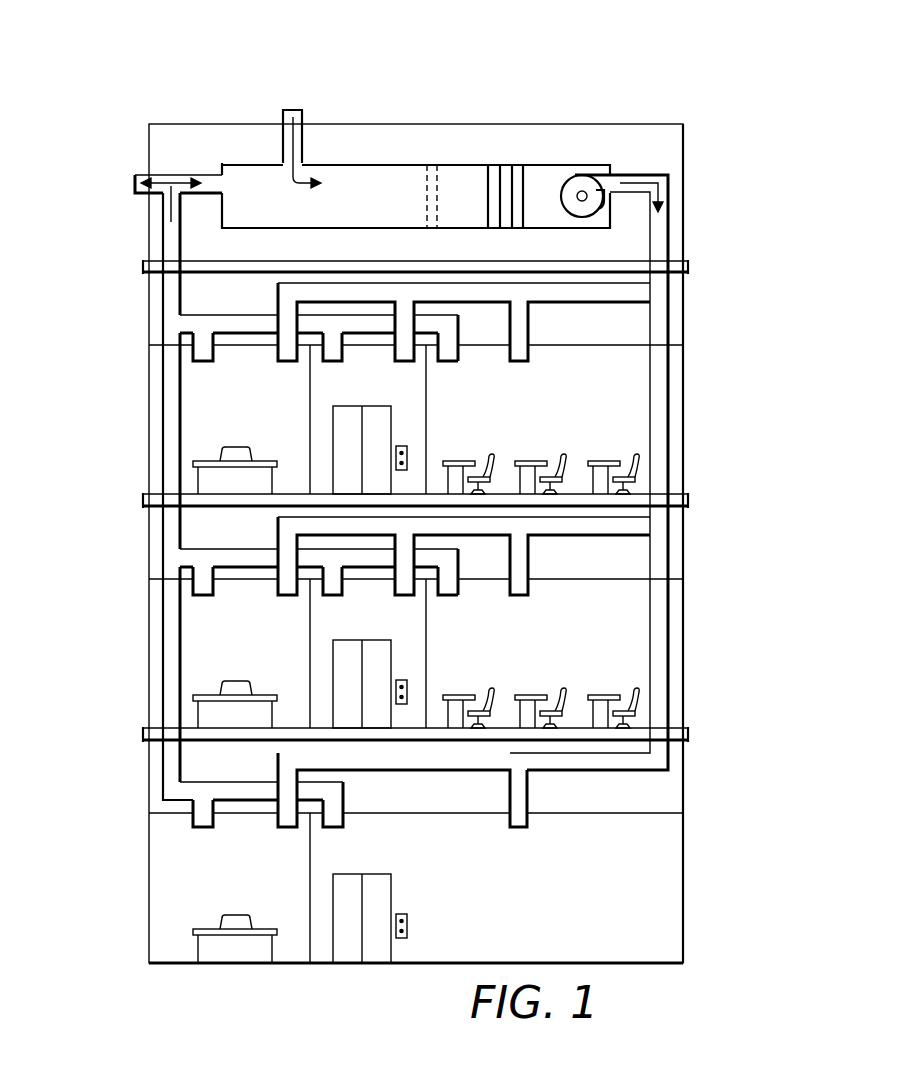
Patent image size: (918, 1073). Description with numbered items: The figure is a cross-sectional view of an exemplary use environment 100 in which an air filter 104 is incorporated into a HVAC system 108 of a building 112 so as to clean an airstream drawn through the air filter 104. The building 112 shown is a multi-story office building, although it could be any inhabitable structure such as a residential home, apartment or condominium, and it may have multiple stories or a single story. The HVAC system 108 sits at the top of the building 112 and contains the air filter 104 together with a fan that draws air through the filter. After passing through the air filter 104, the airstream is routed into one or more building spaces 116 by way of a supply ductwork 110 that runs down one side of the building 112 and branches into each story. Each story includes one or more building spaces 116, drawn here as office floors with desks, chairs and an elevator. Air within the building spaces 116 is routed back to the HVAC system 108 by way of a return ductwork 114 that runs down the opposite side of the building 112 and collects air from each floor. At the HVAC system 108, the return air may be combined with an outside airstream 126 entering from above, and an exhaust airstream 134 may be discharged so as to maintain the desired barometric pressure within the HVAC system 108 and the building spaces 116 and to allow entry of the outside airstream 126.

The use environment 100 is at (200, 70).
The air filter 104 is at (433, 163).
The HVAC system 108 is at (547, 163).
The supply ductwork 110 is at (660, 618).
The building 112 is at (687, 207).
The return ductwork 114 is at (168, 412).
The building spaces 116 is at (633, 397).
The outside airstream 126 is at (297, 108).
The exhaust airstream 134 is at (135, 183).